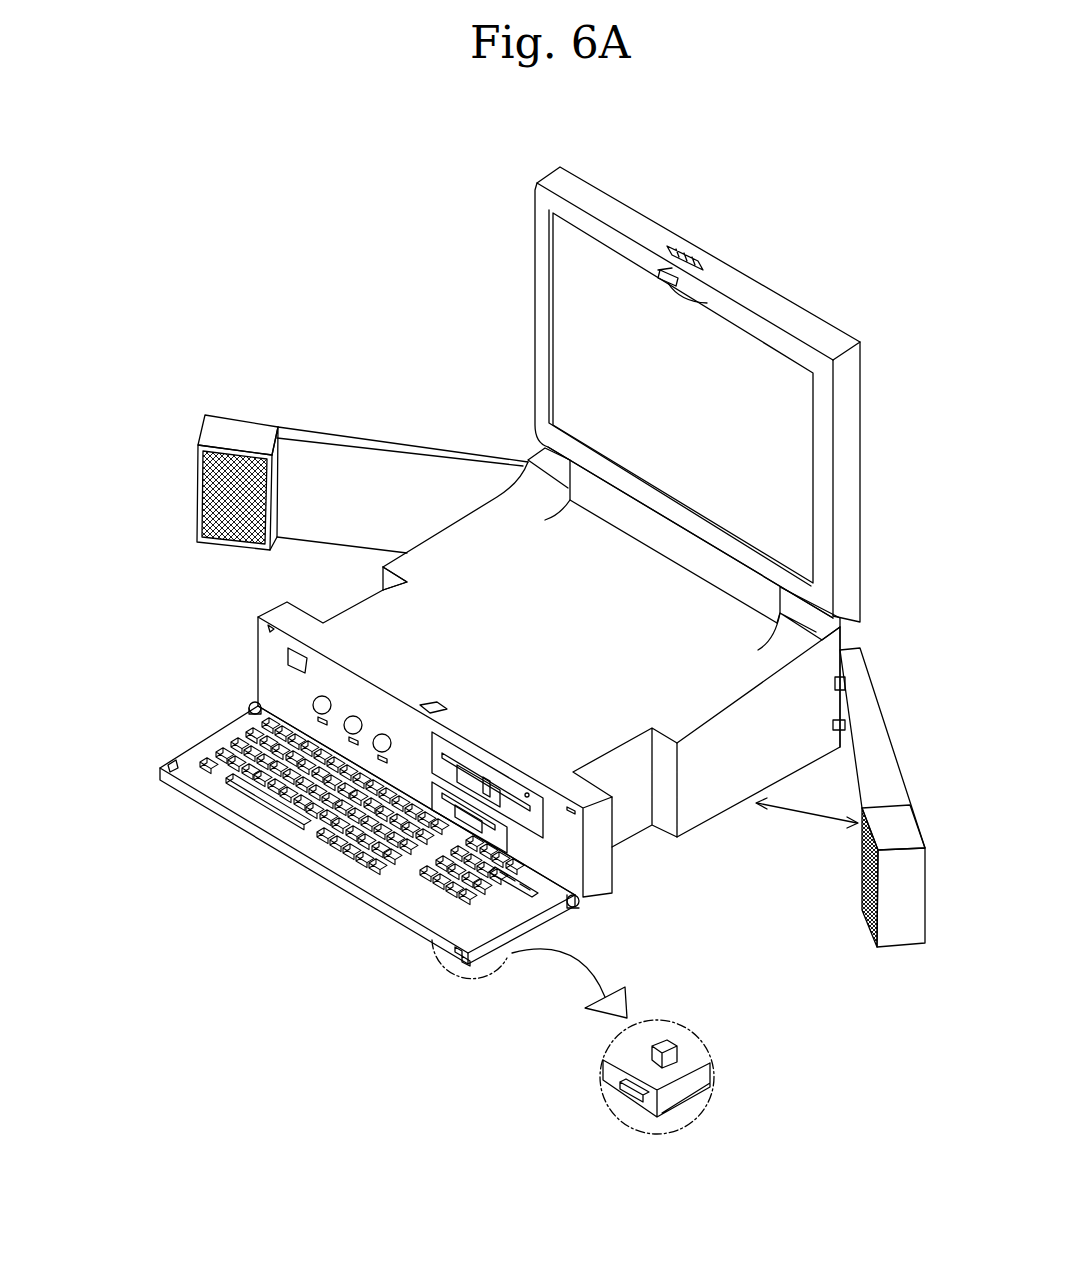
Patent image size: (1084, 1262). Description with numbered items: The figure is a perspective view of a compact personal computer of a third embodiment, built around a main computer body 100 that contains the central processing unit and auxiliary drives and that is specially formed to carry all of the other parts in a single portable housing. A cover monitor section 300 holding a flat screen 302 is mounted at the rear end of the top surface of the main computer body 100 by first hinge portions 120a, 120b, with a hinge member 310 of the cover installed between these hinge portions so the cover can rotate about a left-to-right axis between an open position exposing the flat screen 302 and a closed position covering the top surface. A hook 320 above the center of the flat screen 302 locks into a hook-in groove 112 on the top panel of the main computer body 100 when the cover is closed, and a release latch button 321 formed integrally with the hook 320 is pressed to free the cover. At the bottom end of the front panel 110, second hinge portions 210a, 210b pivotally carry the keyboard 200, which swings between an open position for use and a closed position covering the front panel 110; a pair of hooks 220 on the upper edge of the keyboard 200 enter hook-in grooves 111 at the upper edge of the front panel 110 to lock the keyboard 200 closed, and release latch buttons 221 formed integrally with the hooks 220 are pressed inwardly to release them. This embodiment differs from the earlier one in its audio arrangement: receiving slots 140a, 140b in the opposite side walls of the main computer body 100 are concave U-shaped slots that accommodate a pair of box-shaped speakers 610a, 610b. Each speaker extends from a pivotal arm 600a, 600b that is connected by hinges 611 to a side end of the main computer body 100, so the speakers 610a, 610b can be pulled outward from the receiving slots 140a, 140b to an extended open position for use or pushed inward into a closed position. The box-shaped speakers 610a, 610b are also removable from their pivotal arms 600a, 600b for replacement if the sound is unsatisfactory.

The main computer body 100 is at (475, 645).
The front panel 110 is at (361, 757).
The hook-in grooves 111 is at (265, 628).
The hook-in groove 112 is at (445, 702).
The first hinge portion 120a is at (838, 620).
The first hinge portion 120b is at (530, 455).
The receiving slot 140a is at (632, 753).
The receiving slot 140b is at (362, 598).
The keyboard 200 is at (448, 915).
The second hinge portion 210a is at (582, 908).
The second hinge portion 210b is at (248, 712).
The hooks 220 is at (463, 953).
The release latch buttons 221 is at (472, 970).
The cover monitor section 300 is at (603, 394).
The flat screen 302 is at (683, 395).
The hinge member 310 is at (653, 538).
The hook 320 is at (695, 300).
The release latch button 321 is at (690, 243).
The pivotal arm 600a is at (835, 754).
The pivotal arm 600b is at (329, 422).
The box-shaped speaker 610a is at (915, 836).
The box-shaped speaker 610b is at (287, 408).
The hinges 611 is at (833, 731).